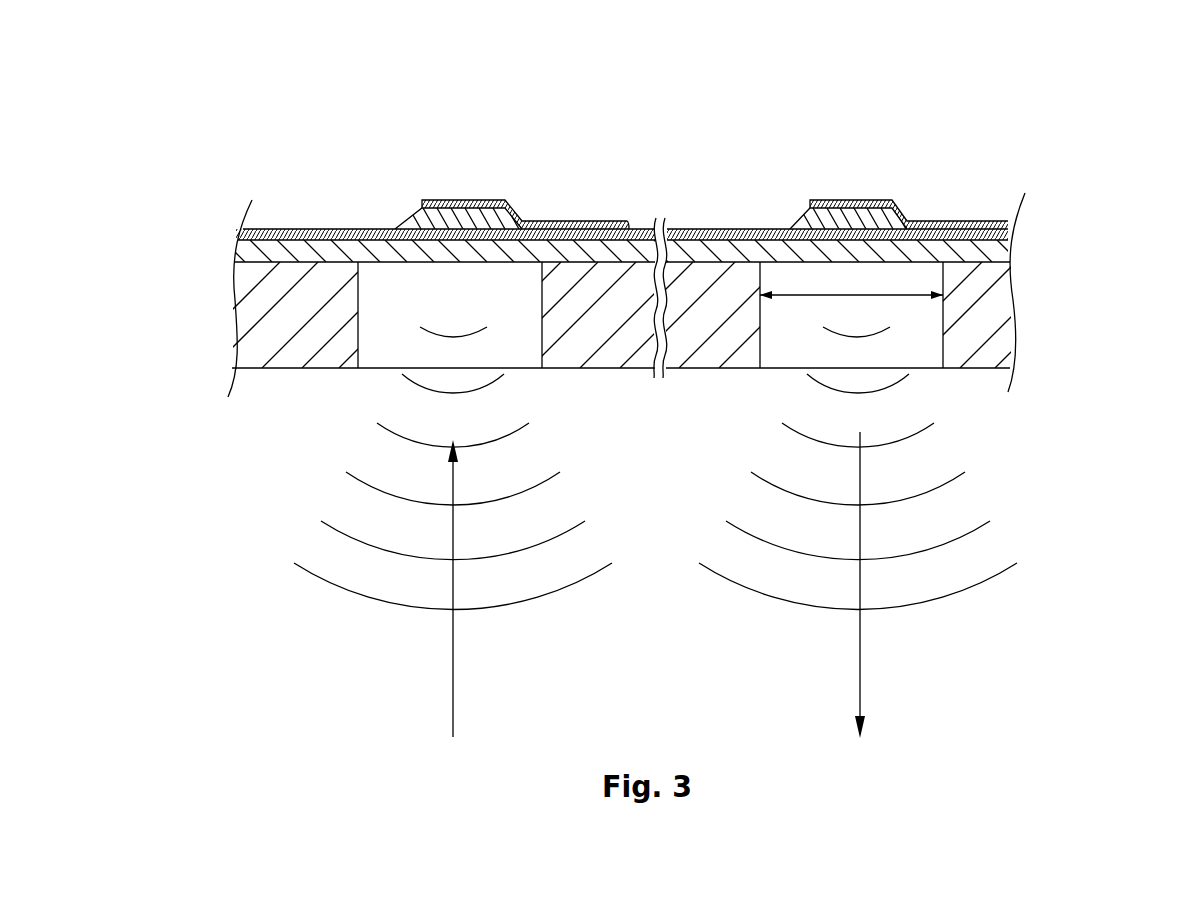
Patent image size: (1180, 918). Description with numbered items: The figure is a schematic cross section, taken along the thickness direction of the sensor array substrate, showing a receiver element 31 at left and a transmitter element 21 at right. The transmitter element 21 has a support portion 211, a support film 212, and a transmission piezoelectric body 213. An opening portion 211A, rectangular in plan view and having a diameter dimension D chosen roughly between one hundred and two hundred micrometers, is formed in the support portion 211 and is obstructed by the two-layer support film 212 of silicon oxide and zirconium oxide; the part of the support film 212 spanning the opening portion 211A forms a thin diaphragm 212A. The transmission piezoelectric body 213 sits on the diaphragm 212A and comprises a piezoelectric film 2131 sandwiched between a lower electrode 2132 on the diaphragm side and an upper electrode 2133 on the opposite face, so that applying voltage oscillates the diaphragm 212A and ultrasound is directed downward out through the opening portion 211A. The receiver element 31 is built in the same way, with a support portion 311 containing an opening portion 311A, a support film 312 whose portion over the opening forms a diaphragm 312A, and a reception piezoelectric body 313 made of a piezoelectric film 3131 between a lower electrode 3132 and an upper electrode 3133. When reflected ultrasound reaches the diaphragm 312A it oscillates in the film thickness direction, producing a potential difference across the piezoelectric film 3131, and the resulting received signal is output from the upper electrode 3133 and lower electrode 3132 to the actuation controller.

The receiver element 31 is at (455, 95).
The transmitter element 21 is at (808, 95).
The support portion 311 is at (247, 327).
The opening portion 311A is at (360, 350).
The support film 312 is at (242, 257).
The diaphragm 312A is at (514, 333).
The reception piezoelectric body 313 is at (337, 80).
The piezoelectric film 3131 is at (477, 200).
The lower electrode 3132 is at (356, 229).
The upper electrode 3133 is at (444, 205).
The support portion 211 is at (1010, 343).
The opening portion 211A is at (943, 350).
The support film 212 is at (1000, 245).
The diaphragm 212A is at (783, 345).
The transmission piezoelectric body 213 is at (976, 78).
The piezoelectric film 2131 is at (842, 200).
The lower electrode 2132 is at (962, 221).
The upper electrode 2133 is at (870, 205).